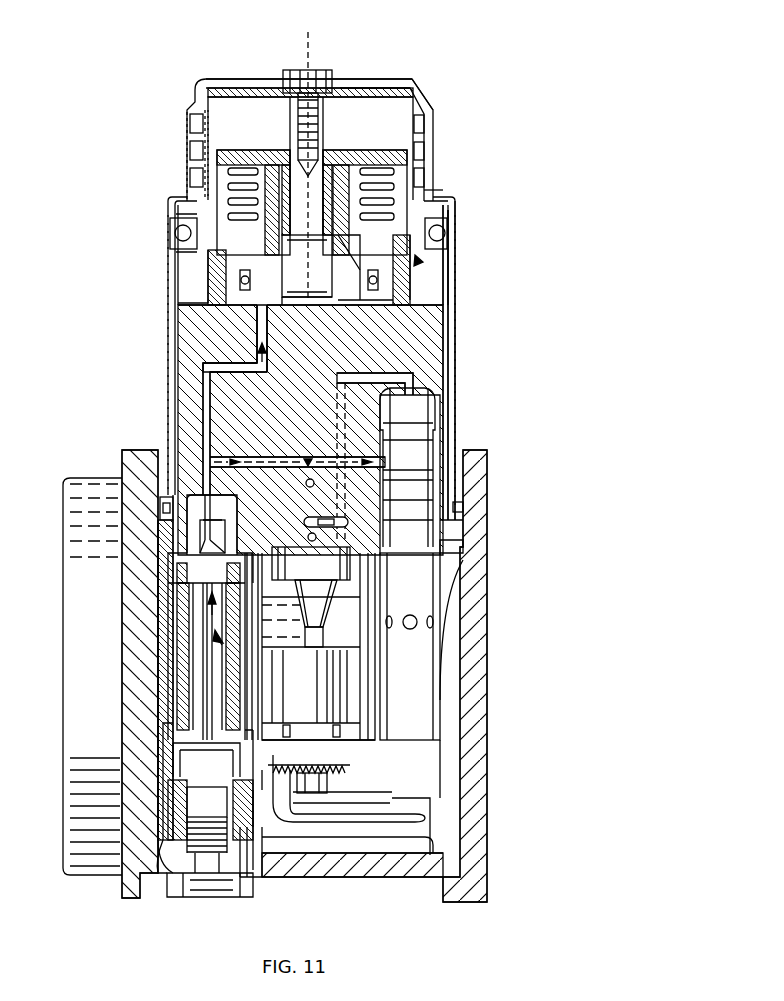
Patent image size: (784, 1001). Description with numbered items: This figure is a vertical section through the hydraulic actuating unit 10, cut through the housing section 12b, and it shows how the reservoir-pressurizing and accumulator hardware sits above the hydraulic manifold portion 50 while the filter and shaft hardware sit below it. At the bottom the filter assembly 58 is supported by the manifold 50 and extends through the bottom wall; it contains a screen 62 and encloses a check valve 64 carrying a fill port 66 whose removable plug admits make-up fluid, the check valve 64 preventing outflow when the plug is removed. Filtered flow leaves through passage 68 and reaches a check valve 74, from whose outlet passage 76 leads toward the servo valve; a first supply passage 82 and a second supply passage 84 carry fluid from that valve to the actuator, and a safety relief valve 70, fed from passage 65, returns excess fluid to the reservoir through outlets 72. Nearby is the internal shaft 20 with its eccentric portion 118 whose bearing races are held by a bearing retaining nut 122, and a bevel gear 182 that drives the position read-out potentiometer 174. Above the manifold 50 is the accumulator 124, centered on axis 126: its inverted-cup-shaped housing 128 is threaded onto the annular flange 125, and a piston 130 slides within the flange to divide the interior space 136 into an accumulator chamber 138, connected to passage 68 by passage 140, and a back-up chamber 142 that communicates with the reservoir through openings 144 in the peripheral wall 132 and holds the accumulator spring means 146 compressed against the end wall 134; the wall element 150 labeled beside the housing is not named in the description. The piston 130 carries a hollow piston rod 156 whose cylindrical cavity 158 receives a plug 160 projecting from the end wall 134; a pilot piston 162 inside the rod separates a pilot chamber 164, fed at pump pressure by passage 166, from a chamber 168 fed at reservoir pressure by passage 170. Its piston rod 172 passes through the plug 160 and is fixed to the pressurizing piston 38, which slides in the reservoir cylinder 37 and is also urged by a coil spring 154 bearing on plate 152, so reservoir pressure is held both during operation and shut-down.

The hydraulic actuating unit 10 is at (192, 58).
The second protruding housing section 12b is at (430, 100).
The internal shaft 20 is at (285, 642).
The reservoir cylinder 37 is at (455, 347).
The pressurizing piston 38 is at (422, 84).
The hydraulic manifold portion 50 is at (432, 363).
The filter assembly 58 is at (245, 725).
The screen 62 is at (185, 697).
The check valve 64 is at (208, 798).
The passage 65 is at (268, 460).
The fill port 66 is at (218, 892).
The passage 68 is at (219, 524).
The safety relief valve 70 is at (410, 605).
The outlets 72 is at (428, 630).
The check valve 74 is at (407, 467).
The passage 76 is at (372, 372).
The first supply passage 82 is at (306, 486).
The second supply passage 84 is at (312, 318).
The eccentric portion 118 is at (318, 701).
The bearing retaining nut 122 is at (298, 728).
The accumulator 124 is at (220, 130).
The annular flange 125 is at (413, 287).
The axis 126 is at (318, 40).
The accumulator housing 128 is at (426, 124).
The accumulator piston 130 is at (468, 256).
The peripheral wall 132 is at (445, 189).
The housing end wall 134 is at (337, 153).
The interior space 136 is at (233, 52).
The accumulator chamber 138 is at (423, 310).
The passage 140 is at (258, 330).
The back-up chamber 142 is at (424, 172).
The openings 144 is at (213, 267).
The accumulator spring means 146 is at (424, 150).
The housing wall 150 is at (457, 242).
The plate 152 is at (350, 82).
The coil spring 154 is at (432, 108).
The hollow piston rod 156 is at (290, 152).
The cylindrical cavity 158 is at (170, 250).
The plug 160 is at (330, 157).
The pilot piston 162 is at (310, 235).
The pilot chamber 164 is at (287, 197).
The passage 166 is at (213, 308).
The chamber 168 is at (132, 252).
The passage 170 is at (270, 340).
The piston rod 172 is at (283, 112).
The position read-out potentiometer 174 is at (340, 830).
The bevel gear 182 is at (323, 768).